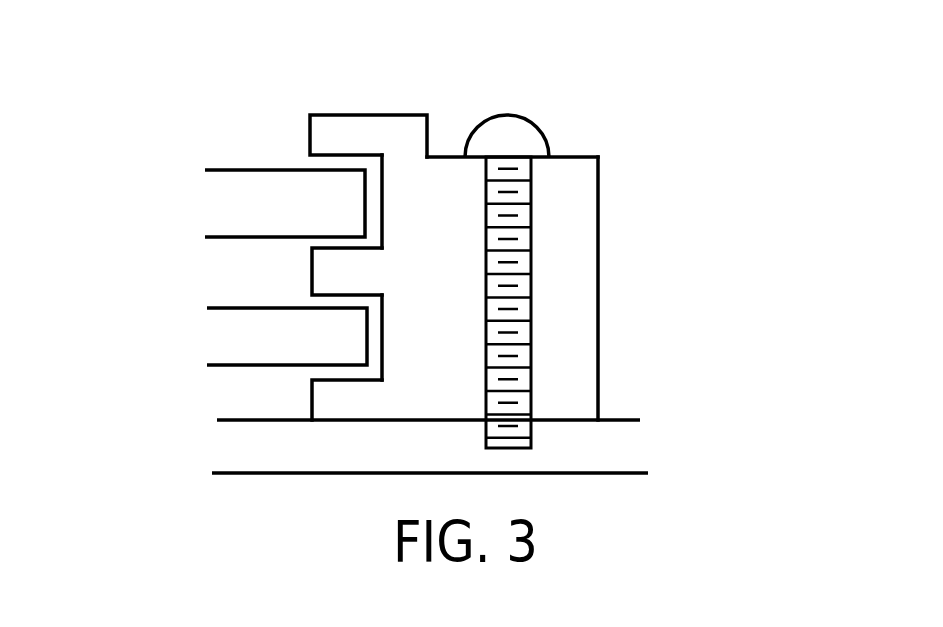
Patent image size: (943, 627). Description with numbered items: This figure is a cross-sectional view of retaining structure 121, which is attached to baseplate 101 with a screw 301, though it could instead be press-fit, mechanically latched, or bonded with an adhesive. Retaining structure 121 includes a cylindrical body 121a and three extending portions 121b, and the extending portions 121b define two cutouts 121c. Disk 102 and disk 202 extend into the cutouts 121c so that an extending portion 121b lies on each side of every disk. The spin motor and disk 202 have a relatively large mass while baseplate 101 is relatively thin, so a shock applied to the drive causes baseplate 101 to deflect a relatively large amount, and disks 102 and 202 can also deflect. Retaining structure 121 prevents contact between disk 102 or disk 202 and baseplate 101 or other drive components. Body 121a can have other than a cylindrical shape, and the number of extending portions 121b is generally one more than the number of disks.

The baseplate 101 is at (585, 473).
The disk 102 is at (245, 170).
The retaining structure 121 is at (648, 210).
The cylindrical body 121a is at (600, 320).
The extending portions 121b is at (308, 132).
The cutouts 121c is at (383, 330).
The disk 202 is at (312, 400).
The screw 301 is at (530, 193).